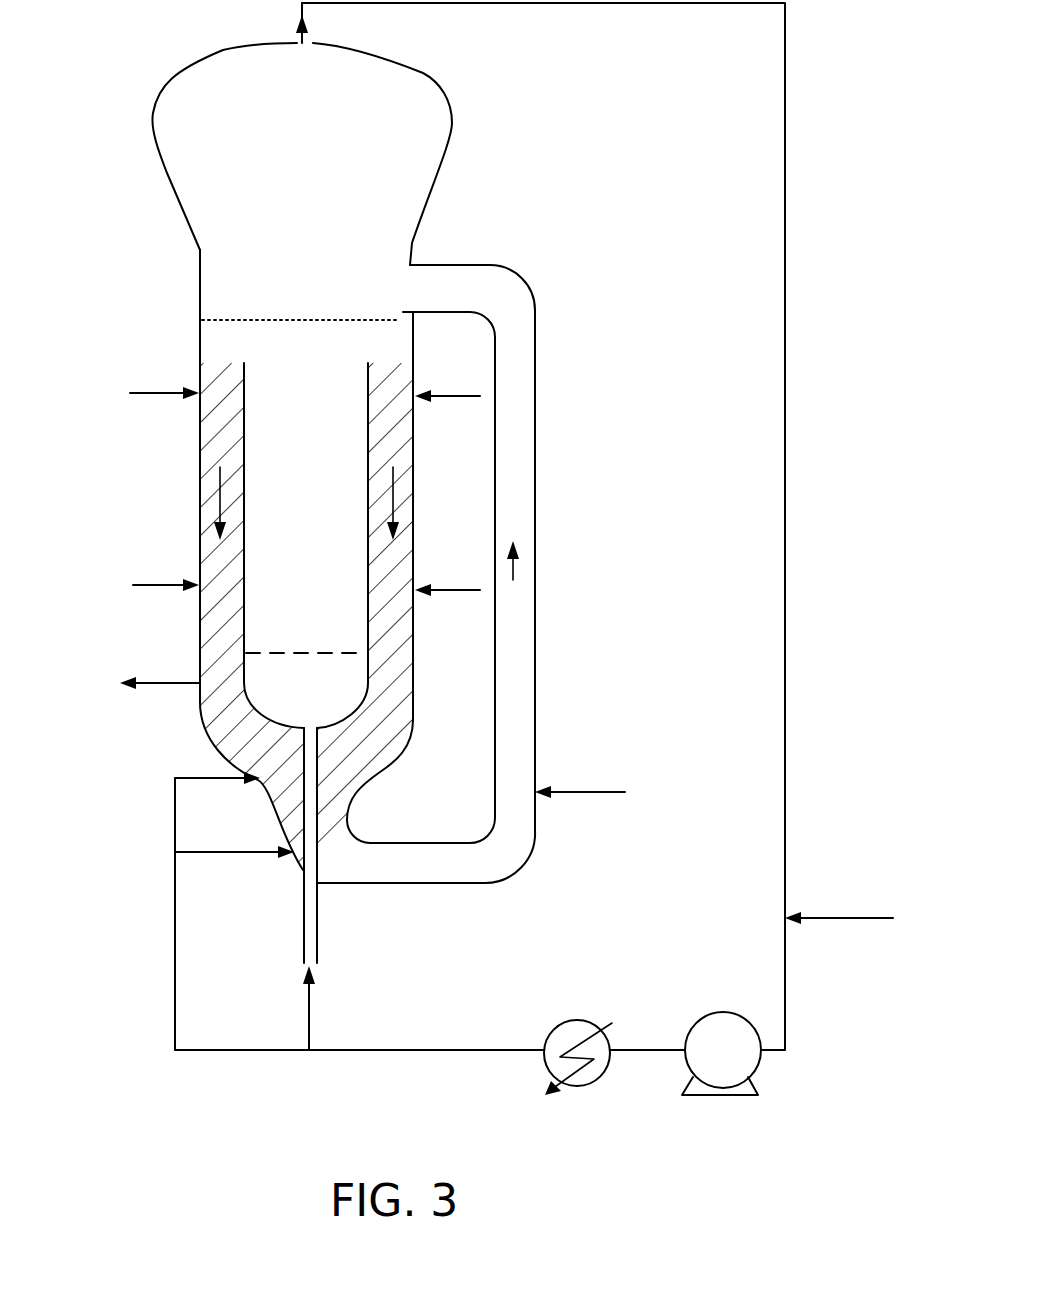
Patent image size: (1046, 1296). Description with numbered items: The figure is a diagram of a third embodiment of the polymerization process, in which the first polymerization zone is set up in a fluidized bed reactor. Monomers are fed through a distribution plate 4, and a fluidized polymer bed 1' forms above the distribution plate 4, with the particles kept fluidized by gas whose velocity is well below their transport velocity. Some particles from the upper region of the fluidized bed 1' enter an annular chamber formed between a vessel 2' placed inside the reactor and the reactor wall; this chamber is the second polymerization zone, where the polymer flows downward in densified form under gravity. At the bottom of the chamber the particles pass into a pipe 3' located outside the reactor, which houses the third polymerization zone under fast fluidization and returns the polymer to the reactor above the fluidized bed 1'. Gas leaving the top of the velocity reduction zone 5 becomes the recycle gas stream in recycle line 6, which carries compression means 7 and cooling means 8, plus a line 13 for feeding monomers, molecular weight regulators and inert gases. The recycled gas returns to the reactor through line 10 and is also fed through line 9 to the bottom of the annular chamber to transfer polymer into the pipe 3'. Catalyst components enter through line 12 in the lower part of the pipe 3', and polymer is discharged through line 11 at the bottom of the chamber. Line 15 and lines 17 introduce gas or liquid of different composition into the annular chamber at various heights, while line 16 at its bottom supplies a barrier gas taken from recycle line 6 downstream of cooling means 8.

The fluidized polymer bed 1' is at (235, 545).
The vessel 2' is at (216, 591).
The pipe 3' is at (490, 574).
The distribution plate 4 is at (292, 653).
The velocity reduction zone 5 is at (290, 143).
The recycle line 6 is at (786, 548).
The compression means 7 is at (723, 1012).
The cooling means 8 is at (562, 1020).
The line 9 is at (266, 853).
The line 10 is at (310, 1003).
The discharge line 11 is at (147, 683).
The line 12 is at (575, 792).
The line 13 is at (855, 918).
The line 15 is at (134, 393).
The line 16 is at (214, 779).
The lines 17 is at (140, 585).